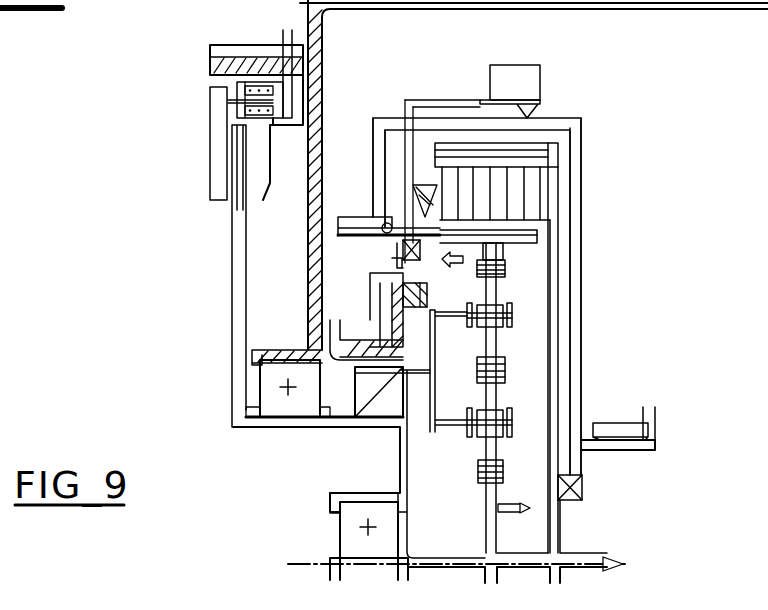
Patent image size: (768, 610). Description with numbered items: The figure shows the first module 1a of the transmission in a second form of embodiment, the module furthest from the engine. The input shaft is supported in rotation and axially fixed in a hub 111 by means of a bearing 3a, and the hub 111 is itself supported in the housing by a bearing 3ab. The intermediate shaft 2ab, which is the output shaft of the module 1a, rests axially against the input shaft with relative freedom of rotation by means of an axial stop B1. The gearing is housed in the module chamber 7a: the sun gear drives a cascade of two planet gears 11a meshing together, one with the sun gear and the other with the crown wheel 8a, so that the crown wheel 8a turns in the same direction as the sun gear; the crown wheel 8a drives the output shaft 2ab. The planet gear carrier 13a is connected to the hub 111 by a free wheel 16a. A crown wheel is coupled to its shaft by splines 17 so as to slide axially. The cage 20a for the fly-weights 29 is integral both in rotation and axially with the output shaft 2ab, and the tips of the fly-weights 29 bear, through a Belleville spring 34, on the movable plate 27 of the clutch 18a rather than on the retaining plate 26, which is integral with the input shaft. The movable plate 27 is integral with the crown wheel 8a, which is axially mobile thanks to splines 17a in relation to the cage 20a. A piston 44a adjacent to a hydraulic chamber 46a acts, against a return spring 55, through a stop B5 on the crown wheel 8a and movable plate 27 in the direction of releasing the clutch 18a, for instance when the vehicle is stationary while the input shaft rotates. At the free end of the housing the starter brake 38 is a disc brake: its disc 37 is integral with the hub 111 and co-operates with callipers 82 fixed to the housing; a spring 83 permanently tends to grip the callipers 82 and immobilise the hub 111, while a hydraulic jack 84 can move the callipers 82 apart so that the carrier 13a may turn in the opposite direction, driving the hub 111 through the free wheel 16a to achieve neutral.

The first module 1a is at (442, 72).
The intermediate shaft 2ab is at (613, 454).
The bearing 3a is at (400, 525).
The bearing 3ab is at (305, 418).
The gear chamber 7a is at (451, 450).
The crown wheel 8a is at (497, 250).
The planet gears 11a is at (495, 287).
The planet gear carrier 13a is at (436, 338).
The free wheel 16a is at (388, 408).
The splines 17 is at (617, 425).
The splines 17a is at (353, 217).
The clutch 18a is at (428, 132).
The cage 20a is at (564, 118).
The retaining plate 26 is at (548, 182).
The movable plate 27 is at (440, 185).
The fly-weights 29 is at (512, 58).
The Belleville spring 34 is at (437, 190).
The disc 37 is at (241, 221).
The starter brake 38 is at (222, 40).
The piston 44a is at (372, 297).
The hydraulic chamber 46a is at (385, 322).
The return spring 55 is at (438, 279).
The callipers 82 is at (258, 157).
The spring 83 is at (259, 88).
The hydraulic jack 84 is at (287, 107).
The hub 111 is at (270, 430).
The axial stop B1 is at (566, 505).
The stop B5 is at (402, 248).